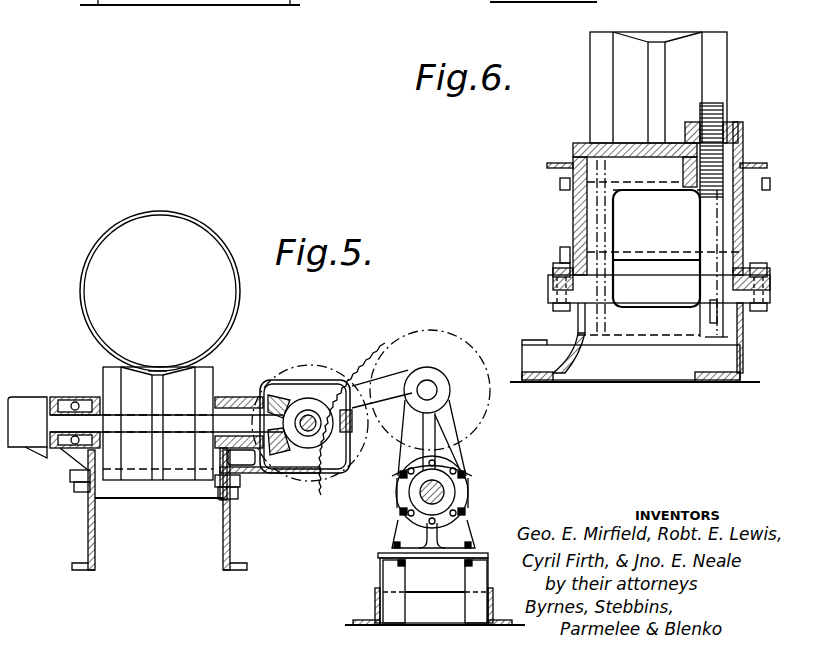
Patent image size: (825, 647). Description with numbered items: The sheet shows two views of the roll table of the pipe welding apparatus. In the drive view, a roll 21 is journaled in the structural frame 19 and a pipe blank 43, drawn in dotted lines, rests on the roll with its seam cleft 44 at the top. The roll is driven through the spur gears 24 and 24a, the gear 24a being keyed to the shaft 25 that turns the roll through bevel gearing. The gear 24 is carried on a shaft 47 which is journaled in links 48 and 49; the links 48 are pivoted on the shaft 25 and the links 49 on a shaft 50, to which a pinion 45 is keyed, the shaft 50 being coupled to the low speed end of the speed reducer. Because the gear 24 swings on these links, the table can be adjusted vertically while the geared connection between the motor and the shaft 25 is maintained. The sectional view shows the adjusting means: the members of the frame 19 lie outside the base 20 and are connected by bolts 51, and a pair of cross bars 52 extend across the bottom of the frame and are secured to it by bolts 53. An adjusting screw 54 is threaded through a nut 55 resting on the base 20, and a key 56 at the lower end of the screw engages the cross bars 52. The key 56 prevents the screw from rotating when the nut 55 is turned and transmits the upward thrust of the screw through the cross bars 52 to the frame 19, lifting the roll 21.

In FIG. 6, the structural frame 19 is at (572, 212).
In FIG. 6, the base 20 is at (635, 361).
In FIG. 5, the roll 21 is at (208, 380).
In FIG. 6, the roll 21 is at (682, 48).
In FIG. 5, the spur gear 24 is at (430, 332).
In FIG. 5, the spur gear 24a is at (316, 364).
In FIG. 5, the shaft 25 is at (308, 432).
In FIG. 5, the pipe blank 43 is at (80, 270).
In FIG. 5, the seam cleft 44 is at (200, 348).
In FIG. 5, the pinion 45 is at (455, 470).
In FIG. 5, the shaft 47 is at (428, 388).
In FIG. 5, the link 48 is at (377, 390).
In FIG. 5, the link 49 is at (460, 433).
In FIG. 5, the shaft 50 is at (446, 492).
In FIG. 6, the bolt 51 is at (558, 185).
In FIG. 6, the cross bar 52 is at (605, 292).
In FIG. 6, the bolt 53 is at (553, 270).
In FIG. 6, the adjusting screw 54 is at (712, 213).
In FIG. 6, the nut 55 is at (722, 124).
In FIG. 6, the key 56 is at (708, 318).